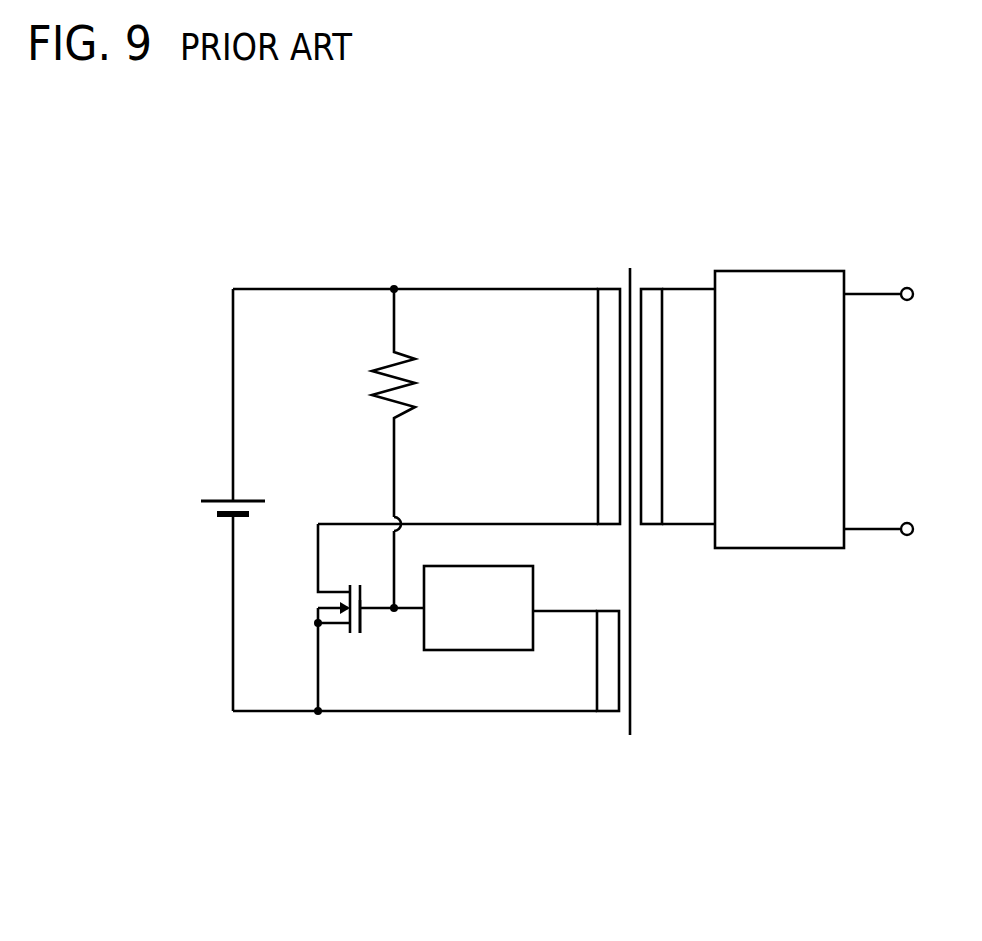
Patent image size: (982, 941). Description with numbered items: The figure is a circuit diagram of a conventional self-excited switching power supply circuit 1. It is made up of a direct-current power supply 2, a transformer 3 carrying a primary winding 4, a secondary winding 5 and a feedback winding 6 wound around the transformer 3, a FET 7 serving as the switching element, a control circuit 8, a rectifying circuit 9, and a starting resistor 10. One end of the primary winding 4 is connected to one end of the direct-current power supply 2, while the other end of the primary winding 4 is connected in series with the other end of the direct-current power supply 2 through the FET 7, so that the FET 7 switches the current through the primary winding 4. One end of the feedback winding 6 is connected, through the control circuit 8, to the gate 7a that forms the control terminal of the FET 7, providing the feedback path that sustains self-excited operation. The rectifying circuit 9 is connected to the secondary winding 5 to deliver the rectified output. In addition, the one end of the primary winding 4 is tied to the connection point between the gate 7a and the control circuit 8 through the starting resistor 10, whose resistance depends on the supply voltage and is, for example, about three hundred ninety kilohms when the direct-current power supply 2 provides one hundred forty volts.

The switching power supply circuit 1 is at (235, 247).
The direct-current power supply 2 is at (218, 488).
The transformer 3 is at (636, 265).
The primary winding 4 is at (604, 287).
The secondary winding 5 is at (656, 287).
The feedback winding 6 is at (607, 720).
The FET 7 is at (302, 612).
The gate 7a is at (371, 618).
The control circuit 8 is at (477, 656).
The rectifying circuit 9 is at (778, 268).
The starting resistor 10 is at (378, 349).